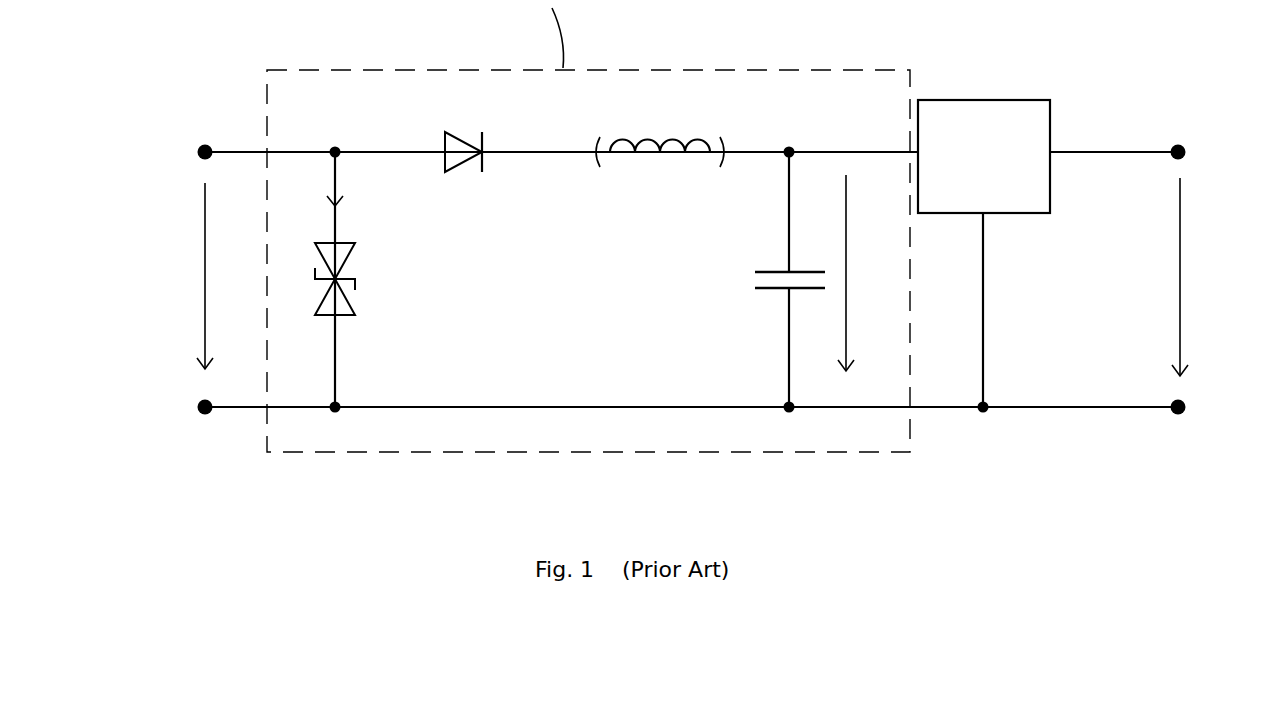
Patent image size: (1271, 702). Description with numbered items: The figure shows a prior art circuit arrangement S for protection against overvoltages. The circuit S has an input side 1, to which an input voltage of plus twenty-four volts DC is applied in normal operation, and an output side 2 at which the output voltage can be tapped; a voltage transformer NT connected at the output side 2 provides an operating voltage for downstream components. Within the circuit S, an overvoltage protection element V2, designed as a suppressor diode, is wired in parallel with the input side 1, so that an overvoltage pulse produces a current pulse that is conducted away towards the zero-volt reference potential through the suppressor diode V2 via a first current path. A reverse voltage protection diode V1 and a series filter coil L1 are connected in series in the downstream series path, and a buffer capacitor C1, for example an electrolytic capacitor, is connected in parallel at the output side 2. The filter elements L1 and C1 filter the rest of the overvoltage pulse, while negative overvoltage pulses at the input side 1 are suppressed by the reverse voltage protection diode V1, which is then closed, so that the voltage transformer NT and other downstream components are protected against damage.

The input side 1 is at (118, 246).
The output side 2 is at (948, 290).
The reverse voltage protection diode V1 is at (443, 136).
The overvoltage protection element V2 is at (317, 279).
The series filter coil L1 is at (653, 133).
The buffer capacitor C1 is at (776, 279).